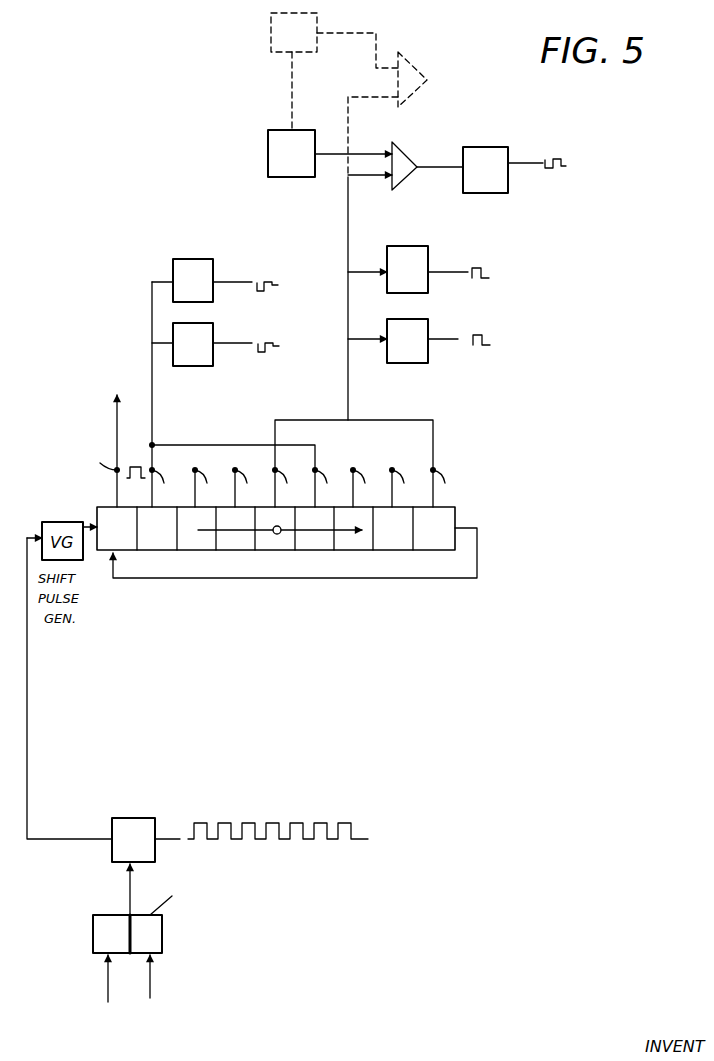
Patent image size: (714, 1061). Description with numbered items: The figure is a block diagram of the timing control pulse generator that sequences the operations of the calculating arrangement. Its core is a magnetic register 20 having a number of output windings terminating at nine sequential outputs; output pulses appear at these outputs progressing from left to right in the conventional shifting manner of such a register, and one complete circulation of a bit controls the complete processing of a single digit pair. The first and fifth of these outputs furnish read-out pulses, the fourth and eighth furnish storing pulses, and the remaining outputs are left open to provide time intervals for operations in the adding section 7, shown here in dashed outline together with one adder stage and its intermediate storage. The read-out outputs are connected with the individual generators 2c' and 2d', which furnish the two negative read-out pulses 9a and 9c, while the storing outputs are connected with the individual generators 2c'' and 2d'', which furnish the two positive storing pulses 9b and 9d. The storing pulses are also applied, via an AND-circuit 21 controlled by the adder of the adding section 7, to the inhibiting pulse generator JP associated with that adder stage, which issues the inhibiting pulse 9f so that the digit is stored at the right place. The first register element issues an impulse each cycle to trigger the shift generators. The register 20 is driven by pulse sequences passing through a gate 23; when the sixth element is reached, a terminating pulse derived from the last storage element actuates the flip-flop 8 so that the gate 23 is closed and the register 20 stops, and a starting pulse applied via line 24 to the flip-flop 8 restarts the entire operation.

The adding section 7 is at (270, 106).
The AND-circuits 21 is at (400, 157).
The inhibiting pulse generator JP is at (482, 153).
The inhibiting pulses 9f is at (566, 164).
The individual generator for negative pulses 2c' is at (182, 266).
The individual generator for negative pulses 2d' is at (182, 359).
The individual generator for positive pulses 2c'' is at (392, 257).
The individual generator for positive pulses 2d'' is at (413, 326).
The negative read-out pulse 9a is at (261, 285).
The positive storing pulse 9b is at (489, 274).
The negative read-out pulse 9c is at (261, 346).
The positive storing pulse 9d is at (490, 341).
The magnetic register 20 is at (452, 522).
The gate 23 is at (135, 818).
The flip-flop 8 is at (93, 922).
The line 24 is at (150, 998).